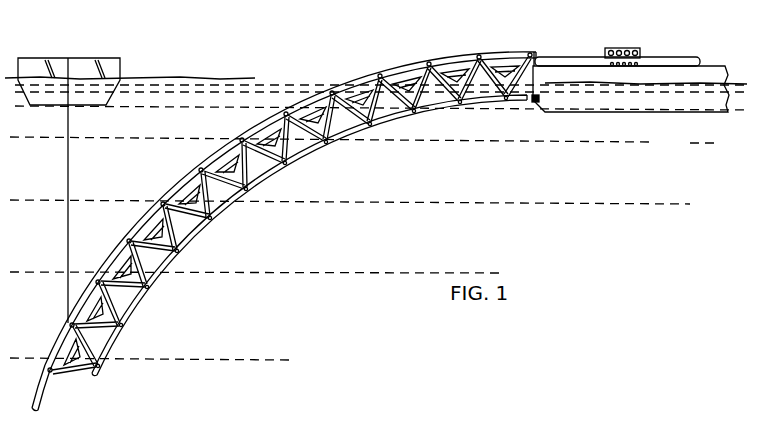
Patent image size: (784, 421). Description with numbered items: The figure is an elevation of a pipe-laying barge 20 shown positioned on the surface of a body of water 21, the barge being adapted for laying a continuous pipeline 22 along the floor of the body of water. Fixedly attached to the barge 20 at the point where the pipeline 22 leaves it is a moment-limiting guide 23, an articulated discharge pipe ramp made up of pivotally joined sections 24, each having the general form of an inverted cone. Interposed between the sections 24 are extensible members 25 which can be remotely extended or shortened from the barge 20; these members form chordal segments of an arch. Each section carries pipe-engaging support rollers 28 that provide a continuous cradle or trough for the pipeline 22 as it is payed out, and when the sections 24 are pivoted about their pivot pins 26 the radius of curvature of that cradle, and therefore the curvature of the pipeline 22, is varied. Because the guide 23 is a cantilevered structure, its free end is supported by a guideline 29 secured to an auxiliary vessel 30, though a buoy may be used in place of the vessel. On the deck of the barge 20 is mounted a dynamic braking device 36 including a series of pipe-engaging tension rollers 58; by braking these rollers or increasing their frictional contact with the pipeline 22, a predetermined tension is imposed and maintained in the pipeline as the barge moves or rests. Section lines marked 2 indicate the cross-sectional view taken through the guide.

The pipe-laying barge 20 is at (655, 100).
The body of water 21 is at (162, 80).
The continuous pipeline 22 is at (563, 58).
The moment-limiting guide 23 is at (366, 214).
The pivotally joined sections 24 is at (497, 53).
The extensible members 25 is at (433, 108).
The pivot pins 26 is at (377, 73).
The pipe-engaging support rollers 28 is at (157, 273).
The guideline 29 is at (69, 155).
The auxiliary vessel 30 is at (77, 58).
The dynamic braking device 36 is at (614, 49).
The pipe-engaging tension rollers 58 is at (640, 53).
The section line 2 is at (137, 181).